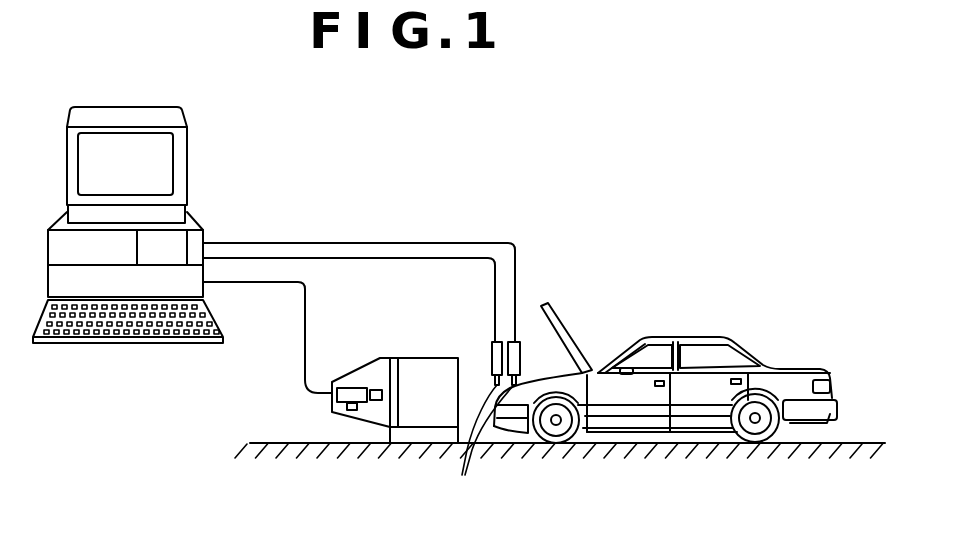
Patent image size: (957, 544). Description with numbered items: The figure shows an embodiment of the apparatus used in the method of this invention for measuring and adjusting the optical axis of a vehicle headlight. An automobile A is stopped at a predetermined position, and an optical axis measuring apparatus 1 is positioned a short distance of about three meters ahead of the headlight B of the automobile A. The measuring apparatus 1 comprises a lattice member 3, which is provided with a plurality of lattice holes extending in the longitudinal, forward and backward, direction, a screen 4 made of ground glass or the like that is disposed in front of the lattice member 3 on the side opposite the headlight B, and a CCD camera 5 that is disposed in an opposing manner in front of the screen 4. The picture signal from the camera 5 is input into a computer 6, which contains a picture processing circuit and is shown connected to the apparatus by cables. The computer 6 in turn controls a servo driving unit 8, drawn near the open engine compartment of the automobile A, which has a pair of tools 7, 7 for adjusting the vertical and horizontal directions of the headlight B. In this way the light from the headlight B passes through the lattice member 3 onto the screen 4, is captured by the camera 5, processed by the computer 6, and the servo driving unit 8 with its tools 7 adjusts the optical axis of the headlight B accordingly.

The optical axis measuring apparatus 1 is at (387, 390).
The lattice member 3 is at (442, 367).
The screen 4 is at (346, 414).
The CCD camera 5 is at (347, 411).
The computer 6 is at (188, 169).
The tools 7 is at (480, 449).
The servo driving unit 8 is at (532, 343).
The automobile A is at (637, 422).
The headlight B is at (515, 388).